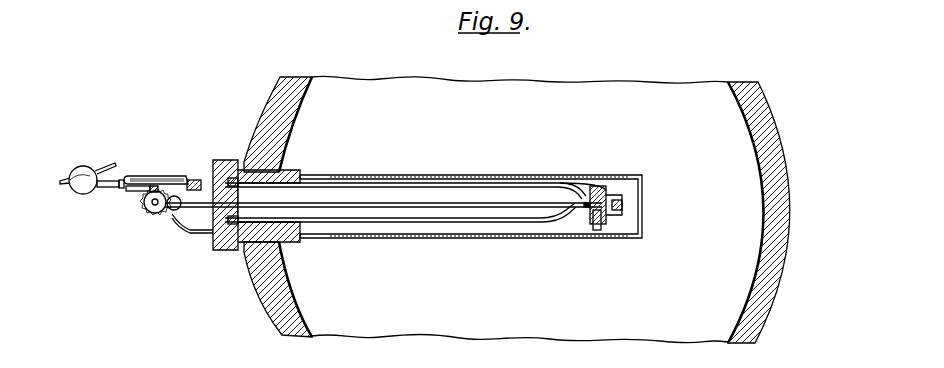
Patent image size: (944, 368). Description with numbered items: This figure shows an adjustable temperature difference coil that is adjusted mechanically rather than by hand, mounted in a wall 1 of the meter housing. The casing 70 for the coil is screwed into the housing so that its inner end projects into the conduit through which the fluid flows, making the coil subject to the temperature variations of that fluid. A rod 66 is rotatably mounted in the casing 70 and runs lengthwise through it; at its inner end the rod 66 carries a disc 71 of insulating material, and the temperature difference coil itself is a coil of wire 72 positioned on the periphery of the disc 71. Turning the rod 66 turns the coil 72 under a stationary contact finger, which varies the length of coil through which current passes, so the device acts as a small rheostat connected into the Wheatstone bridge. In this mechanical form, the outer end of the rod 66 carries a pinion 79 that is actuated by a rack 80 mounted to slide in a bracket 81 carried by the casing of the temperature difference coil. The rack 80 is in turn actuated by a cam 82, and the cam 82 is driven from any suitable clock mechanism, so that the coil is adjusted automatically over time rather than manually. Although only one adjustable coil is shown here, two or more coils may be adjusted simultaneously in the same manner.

The tank 1 is at (767, 123).
The rod 66 is at (421, 206).
The casing 70 is at (318, 174).
The disc of insulating material 71 is at (601, 218).
The coil of wire 72 is at (597, 187).
The pinion 79 is at (155, 213).
The rack 80 is at (138, 181).
The bracket 81 is at (140, 186).
The cam 82 is at (85, 193).